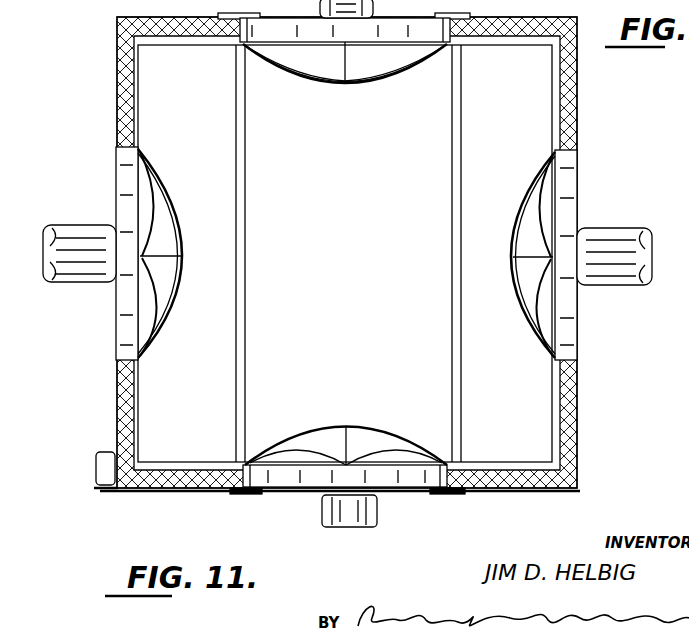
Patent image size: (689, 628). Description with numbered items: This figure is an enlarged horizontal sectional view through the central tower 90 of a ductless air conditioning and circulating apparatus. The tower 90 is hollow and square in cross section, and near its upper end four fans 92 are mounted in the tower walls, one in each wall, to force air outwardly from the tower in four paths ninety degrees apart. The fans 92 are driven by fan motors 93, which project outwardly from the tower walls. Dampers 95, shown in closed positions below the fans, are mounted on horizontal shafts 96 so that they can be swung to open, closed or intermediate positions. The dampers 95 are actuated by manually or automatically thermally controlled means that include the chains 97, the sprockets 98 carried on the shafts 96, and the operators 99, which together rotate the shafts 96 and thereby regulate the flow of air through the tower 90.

The central tower 90 is at (535, 420).
The fans 92 is at (388, 52).
The fan motors 93 is at (318, 8).
The dampers 95 is at (162, 97).
The horizontal shafts 96 is at (247, 348).
The chains 97 is at (180, 490).
The sprockets 98 is at (237, 491).
The operators 99 is at (112, 452).